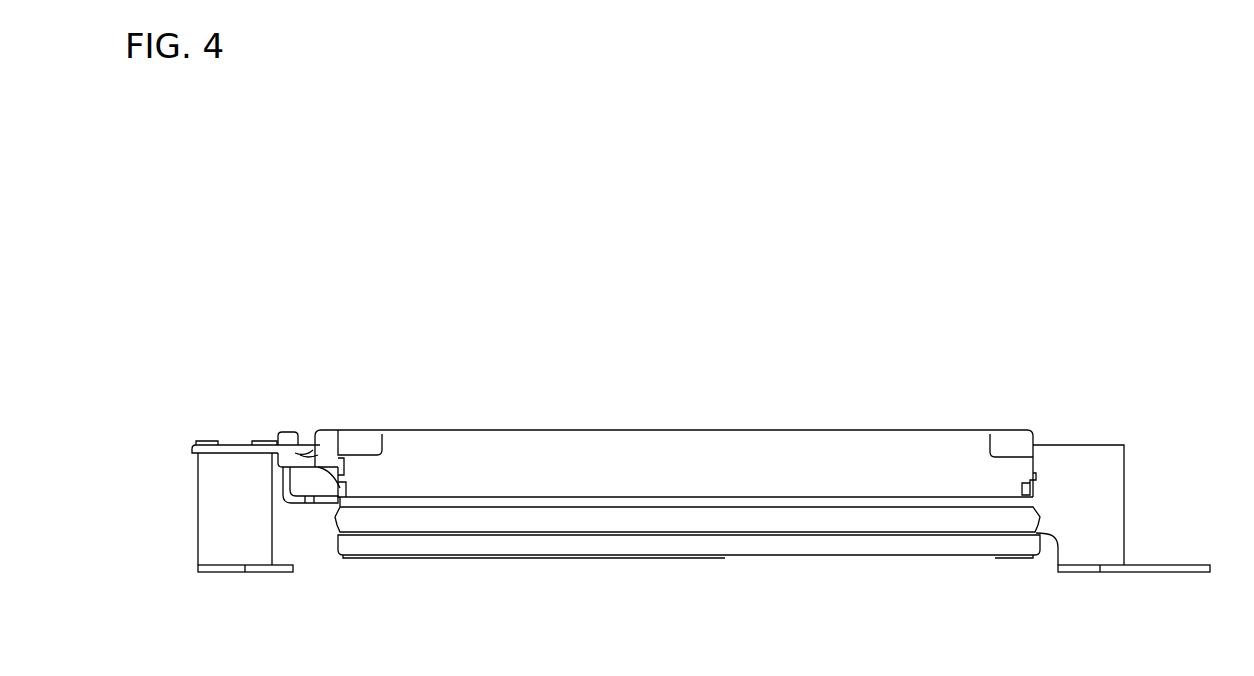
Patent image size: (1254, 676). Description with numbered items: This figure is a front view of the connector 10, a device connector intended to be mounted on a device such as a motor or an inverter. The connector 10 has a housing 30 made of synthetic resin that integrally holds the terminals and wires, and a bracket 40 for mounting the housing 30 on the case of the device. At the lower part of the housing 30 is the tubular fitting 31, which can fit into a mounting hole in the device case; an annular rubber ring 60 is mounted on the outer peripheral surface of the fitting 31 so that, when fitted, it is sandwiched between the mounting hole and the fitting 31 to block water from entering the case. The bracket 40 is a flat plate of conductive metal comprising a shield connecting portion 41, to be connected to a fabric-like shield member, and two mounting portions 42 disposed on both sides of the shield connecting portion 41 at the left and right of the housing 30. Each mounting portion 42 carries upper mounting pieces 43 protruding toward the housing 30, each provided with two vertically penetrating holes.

The connector 10 is at (687, 253).
The housing 30 is at (812, 448).
The fitting 31 is at (677, 543).
The bracket 40 is at (1076, 455).
The shield connecting portion 41 is at (314, 508).
The mounting portion 42 is at (228, 550).
The upper mounting piece 43 is at (305, 447).
The rubber ring 60 is at (817, 515).